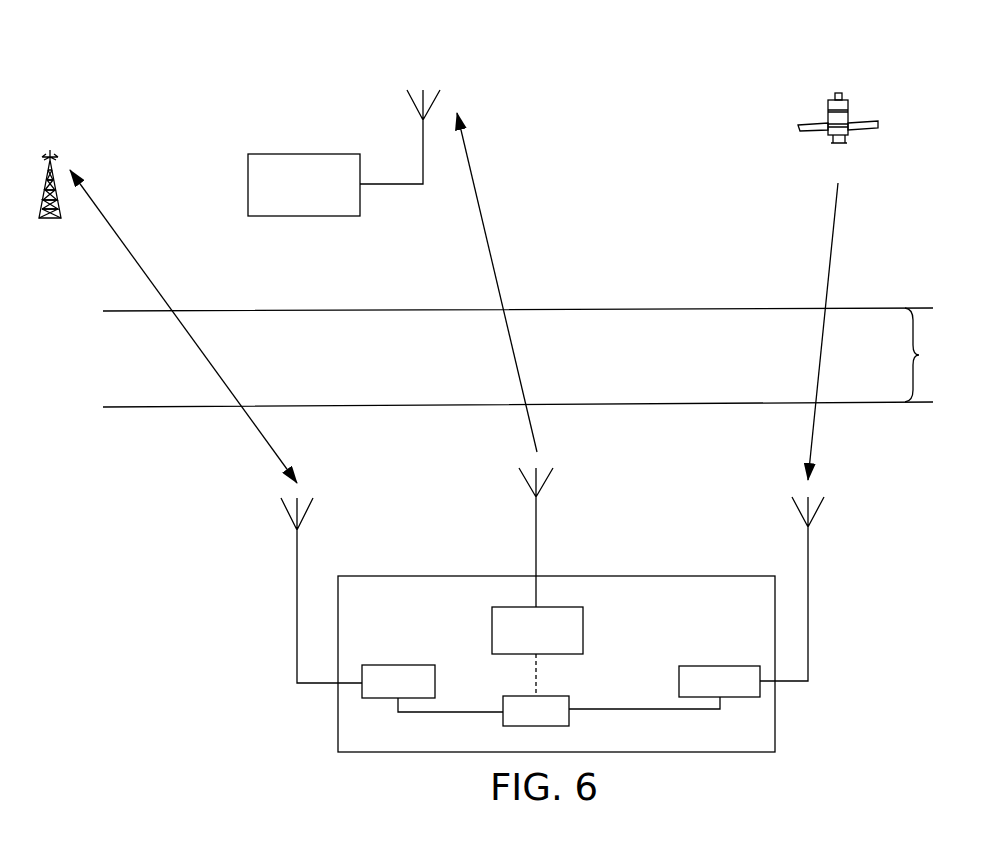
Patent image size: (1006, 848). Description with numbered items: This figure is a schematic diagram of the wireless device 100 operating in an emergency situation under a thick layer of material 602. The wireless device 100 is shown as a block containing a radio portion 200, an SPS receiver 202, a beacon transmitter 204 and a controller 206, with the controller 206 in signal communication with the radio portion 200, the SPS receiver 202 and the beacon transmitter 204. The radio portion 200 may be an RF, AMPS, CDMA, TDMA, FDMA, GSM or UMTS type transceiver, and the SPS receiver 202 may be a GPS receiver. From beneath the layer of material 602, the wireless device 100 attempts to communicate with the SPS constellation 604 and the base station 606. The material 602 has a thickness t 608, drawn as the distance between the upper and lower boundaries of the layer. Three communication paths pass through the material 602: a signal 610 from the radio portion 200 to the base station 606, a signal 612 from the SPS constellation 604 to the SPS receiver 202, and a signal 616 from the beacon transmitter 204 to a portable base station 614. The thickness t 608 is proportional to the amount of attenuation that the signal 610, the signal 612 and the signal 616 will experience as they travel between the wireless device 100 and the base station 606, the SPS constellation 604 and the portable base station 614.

The wireless device 100 is at (762, 608).
The radio portion 200 is at (389, 695).
The SPS receiver 202 is at (711, 696).
The beacon transmitter 204 is at (528, 651).
The controller 206 is at (527, 725).
The thick layer of material 602 is at (678, 358).
The SPS constellation 604 is at (838, 92).
The base station 606 is at (50, 150).
The thickness t 608 is at (937, 355).
The signal 610 is at (160, 290).
The signal 612 is at (828, 270).
The portable base station 614 is at (292, 210).
The signal 616 is at (492, 257).